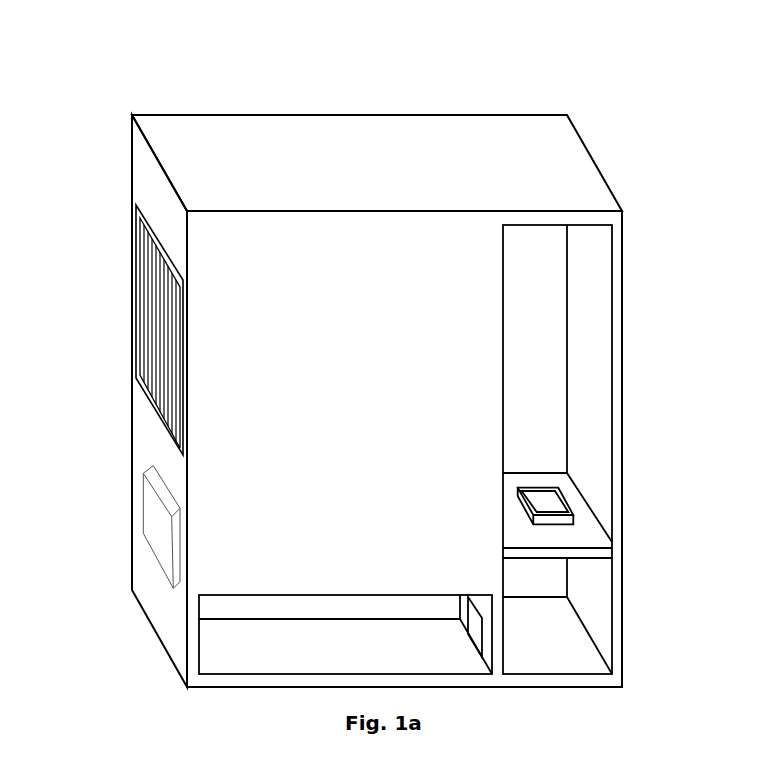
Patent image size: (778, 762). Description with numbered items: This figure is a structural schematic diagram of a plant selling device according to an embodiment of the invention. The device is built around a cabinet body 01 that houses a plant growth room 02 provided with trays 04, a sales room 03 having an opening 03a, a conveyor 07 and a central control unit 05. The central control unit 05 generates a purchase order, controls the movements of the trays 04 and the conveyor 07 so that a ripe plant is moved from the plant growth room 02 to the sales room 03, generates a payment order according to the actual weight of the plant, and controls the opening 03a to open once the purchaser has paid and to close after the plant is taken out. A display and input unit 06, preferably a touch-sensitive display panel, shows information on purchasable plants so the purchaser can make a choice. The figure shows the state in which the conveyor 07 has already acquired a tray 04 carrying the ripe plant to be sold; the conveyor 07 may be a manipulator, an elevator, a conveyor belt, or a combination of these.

The cabinet body 01 is at (360, 102).
The plant growth room 02 is at (175, 223).
The sales room 03 is at (237, 640).
The opening 03a is at (197, 661).
The tray 04 is at (555, 499).
The central control unit 05 is at (157, 525).
The display and input unit 06 is at (475, 368).
The conveyor 07 is at (578, 554).